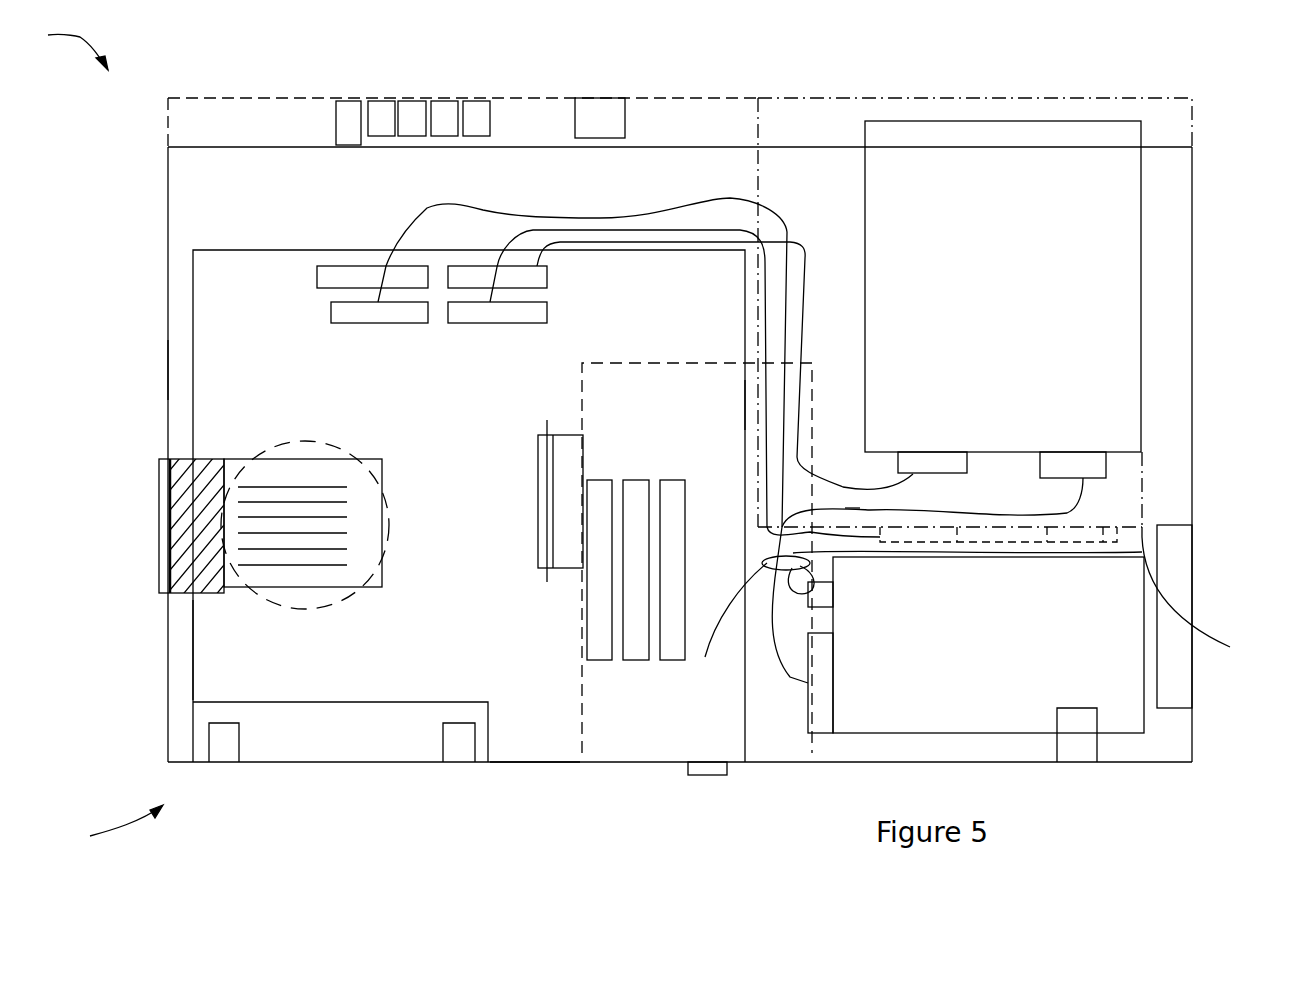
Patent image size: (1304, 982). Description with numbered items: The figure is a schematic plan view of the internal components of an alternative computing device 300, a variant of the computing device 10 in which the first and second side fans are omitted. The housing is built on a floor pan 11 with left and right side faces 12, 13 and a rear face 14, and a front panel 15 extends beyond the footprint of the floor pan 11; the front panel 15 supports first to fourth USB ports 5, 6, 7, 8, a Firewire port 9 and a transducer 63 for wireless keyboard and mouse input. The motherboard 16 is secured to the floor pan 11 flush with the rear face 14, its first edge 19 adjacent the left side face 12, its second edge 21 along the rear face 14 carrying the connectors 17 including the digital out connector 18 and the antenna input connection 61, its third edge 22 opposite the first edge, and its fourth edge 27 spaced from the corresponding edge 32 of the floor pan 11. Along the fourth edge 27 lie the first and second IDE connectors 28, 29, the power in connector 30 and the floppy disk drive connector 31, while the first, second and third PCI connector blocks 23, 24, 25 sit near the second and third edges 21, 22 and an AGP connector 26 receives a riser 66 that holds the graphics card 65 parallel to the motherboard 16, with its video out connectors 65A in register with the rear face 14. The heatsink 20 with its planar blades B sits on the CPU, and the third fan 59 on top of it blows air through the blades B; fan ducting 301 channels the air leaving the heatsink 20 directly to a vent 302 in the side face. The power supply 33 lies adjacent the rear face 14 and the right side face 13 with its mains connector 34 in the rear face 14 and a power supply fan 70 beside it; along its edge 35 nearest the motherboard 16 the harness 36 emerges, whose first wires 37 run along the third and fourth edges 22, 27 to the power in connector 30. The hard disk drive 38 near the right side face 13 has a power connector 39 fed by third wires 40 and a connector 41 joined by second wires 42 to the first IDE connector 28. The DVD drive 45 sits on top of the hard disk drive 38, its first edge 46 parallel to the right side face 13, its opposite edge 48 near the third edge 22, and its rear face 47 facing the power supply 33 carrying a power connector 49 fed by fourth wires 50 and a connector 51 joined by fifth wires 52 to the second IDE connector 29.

The alternative computing device 300 is at (59, 52).
The computing device 10 is at (110, 828).
The front panel 15 is at (275, 97).
The IEEE 1394 port 9 is at (337, 100).
The first USB port 5 is at (380, 101).
The second USB port 6 is at (410, 106).
The third USB port 7 is at (440, 107).
The fourth USB port 8 is at (478, 107).
The transducer 63 is at (607, 97).
The first edge of DVD drive 46 is at (1140, 102).
The DVD drive 45 is at (789, 124).
The edge of DVD drive 48 is at (758, 170).
The edge of floor pan 32 is at (545, 148).
The floor pan 11 is at (232, 209).
The left side face 12 is at (167, 323).
The right side face 13 is at (1195, 292).
The motherboard 16 is at (227, 373).
The rear face 14 is at (567, 763).
The second edge of motherboard 21 is at (520, 755).
The first edge of motherboard 19 is at (195, 640).
The third edge of motherboard 22 is at (740, 402).
The floppy disk drive connector 31 is at (317, 275).
The power in connector 30 is at (367, 323).
The first IDE connector 28 is at (552, 282).
The second IDE connector 29 is at (550, 312).
The first wires 37 is at (527, 207).
The fifth wires 52 is at (773, 333).
The fourth edge of motherboard 27 is at (640, 252).
The third wires 40 is at (947, 513).
The second wires 42 is at (853, 505).
The harness 36 is at (753, 627).
The DVD drive connector 51 is at (917, 535).
The fourth wires 50 is at (993, 543).
The rear face of DVD drive 47 is at (1208, 593).
The DVD drive power connector 49 is at (1103, 522).
The hard disk drive 38 is at (995, 261).
The hard disk drive connector 41 is at (928, 452).
The hard disk drive power connector 39 is at (1106, 462).
The graphics card 65 is at (642, 362).
The AGP connector 26 is at (538, 445).
The riser 66 is at (568, 435).
The first PCI connector block 23 is at (583, 670).
The second PCI connector block 24 is at (620, 660).
The third PCI connector block 25 is at (672, 660).
The video out connectors 65A is at (707, 775).
The fan ducting 301 is at (197, 494).
The vent 302 is at (165, 526).
The heatsink 20 is at (367, 455).
The blades B is at (338, 532).
The third fan 59 is at (317, 603).
The connectors 17 is at (357, 710).
The antenna input connection 61 is at (223, 753).
The digital out connector 18 is at (463, 753).
The power supply 33 is at (966, 643).
The edge of power supply 35 is at (828, 657).
The mains connector 34 is at (1078, 750).
The power supply fan 70 is at (1173, 532).